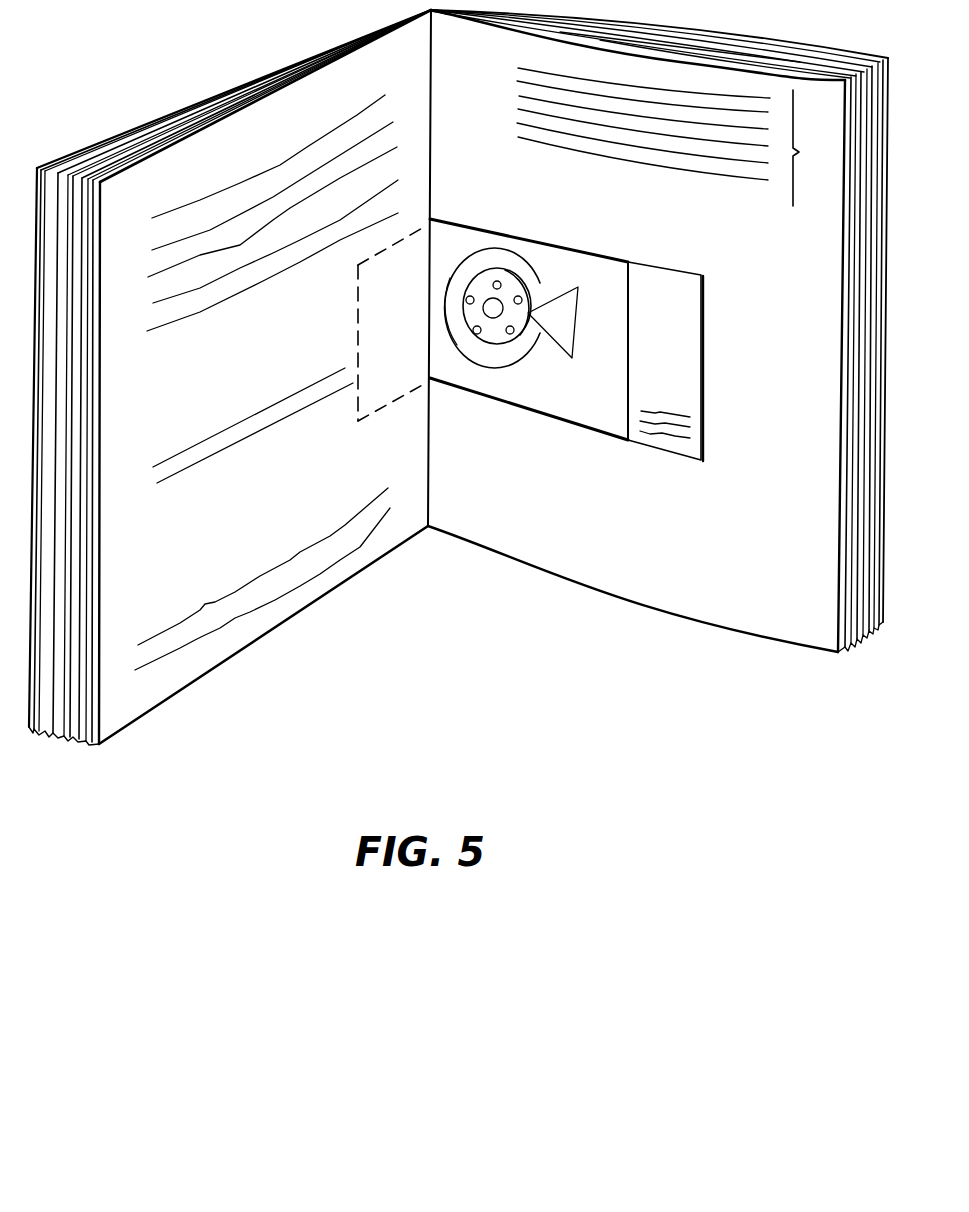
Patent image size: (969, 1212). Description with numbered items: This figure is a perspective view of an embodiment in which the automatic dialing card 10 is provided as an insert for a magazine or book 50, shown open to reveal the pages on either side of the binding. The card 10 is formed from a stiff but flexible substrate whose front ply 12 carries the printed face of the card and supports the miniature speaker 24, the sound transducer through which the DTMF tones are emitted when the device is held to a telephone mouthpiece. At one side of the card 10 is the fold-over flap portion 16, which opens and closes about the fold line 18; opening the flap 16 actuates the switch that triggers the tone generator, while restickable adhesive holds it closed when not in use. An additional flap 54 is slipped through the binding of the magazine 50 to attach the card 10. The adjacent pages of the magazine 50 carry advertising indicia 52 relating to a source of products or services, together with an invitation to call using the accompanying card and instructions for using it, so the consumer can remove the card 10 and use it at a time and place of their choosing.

The card 10 is at (602, 373).
The front ply 12 is at (453, 250).
The fold-over flap portion 16 is at (658, 275).
The fold line 18 is at (707, 323).
The miniature speaker 24 is at (523, 298).
The magazine or book 50 is at (214, 50).
The advertising indicia 52 is at (585, 178).
The additional flap 54 is at (372, 299).